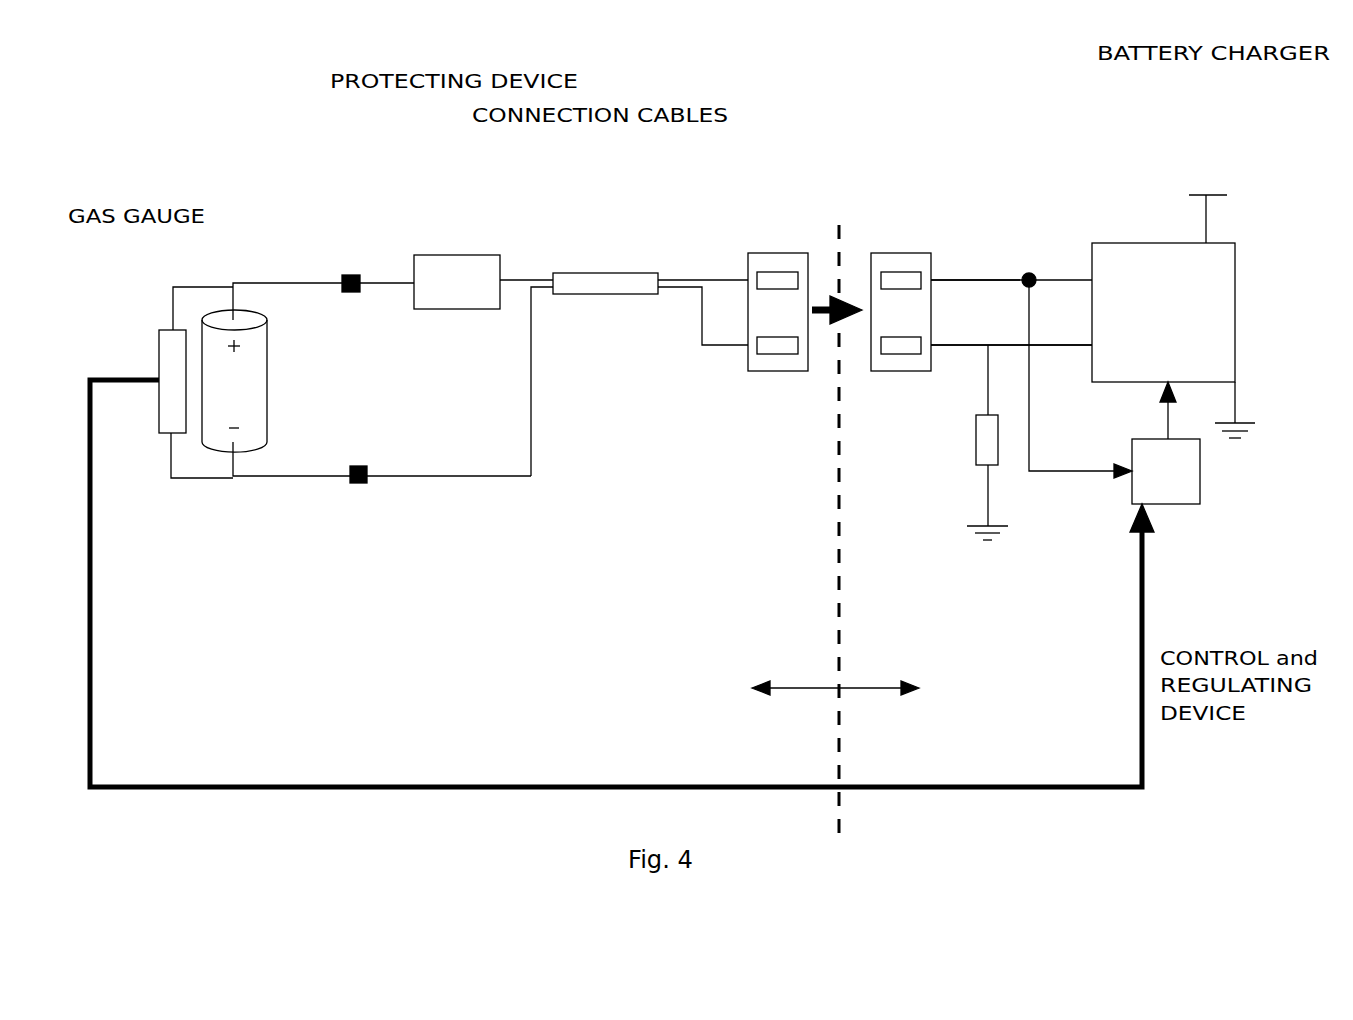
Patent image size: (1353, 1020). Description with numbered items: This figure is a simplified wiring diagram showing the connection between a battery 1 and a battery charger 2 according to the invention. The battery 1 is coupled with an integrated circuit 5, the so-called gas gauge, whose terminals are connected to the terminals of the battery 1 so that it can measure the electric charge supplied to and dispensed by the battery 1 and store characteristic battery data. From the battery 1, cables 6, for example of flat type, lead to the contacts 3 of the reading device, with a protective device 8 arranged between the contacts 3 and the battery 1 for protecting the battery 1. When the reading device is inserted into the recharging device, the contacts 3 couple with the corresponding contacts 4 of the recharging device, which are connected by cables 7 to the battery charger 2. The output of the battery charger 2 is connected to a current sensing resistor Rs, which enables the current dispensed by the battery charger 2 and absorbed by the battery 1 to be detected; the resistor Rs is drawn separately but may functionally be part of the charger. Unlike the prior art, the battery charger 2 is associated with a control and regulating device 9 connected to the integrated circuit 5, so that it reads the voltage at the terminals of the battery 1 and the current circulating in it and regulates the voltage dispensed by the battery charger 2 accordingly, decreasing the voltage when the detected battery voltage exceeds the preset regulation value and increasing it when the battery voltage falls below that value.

The battery 1 is at (247, 392).
The battery charger 2 is at (1140, 262).
The contacts 3 is at (779, 308).
The contacts 4 is at (893, 255).
The integrated circuit 5 is at (168, 362).
The cables 6 is at (582, 285).
The cables 7 is at (970, 280).
The protective device 8 is at (450, 268).
The control and regulating device 9 is at (1178, 478).
The current sensing resistor Rs is at (987, 460).